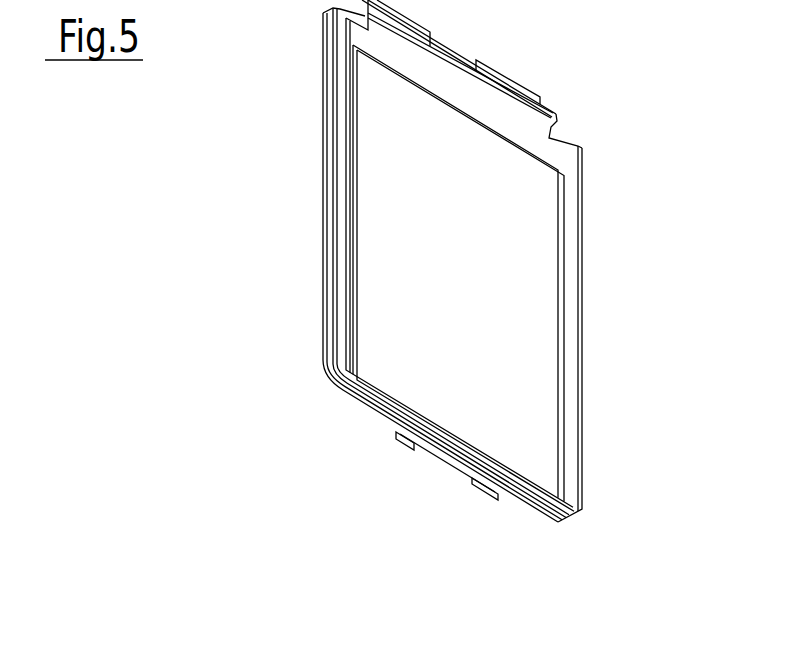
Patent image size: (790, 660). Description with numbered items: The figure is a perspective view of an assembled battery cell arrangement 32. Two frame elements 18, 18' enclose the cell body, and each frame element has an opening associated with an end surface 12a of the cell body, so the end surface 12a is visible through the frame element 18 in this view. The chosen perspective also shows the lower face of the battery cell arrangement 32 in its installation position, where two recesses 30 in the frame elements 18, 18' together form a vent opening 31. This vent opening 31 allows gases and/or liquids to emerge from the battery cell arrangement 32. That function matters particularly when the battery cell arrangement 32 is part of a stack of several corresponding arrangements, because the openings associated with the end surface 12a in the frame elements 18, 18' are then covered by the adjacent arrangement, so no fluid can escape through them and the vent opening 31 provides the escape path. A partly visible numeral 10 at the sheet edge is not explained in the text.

The frame element 18' is at (411, 261).
The frame element 18 is at (504, 253).
The end surface 12a is at (398, 295).
The battery cell arrangement 32 is at (642, 137).
The vent opening 31 is at (438, 462).
The recess 30 is at (413, 443).
The battery module 10 is at (390, 653).